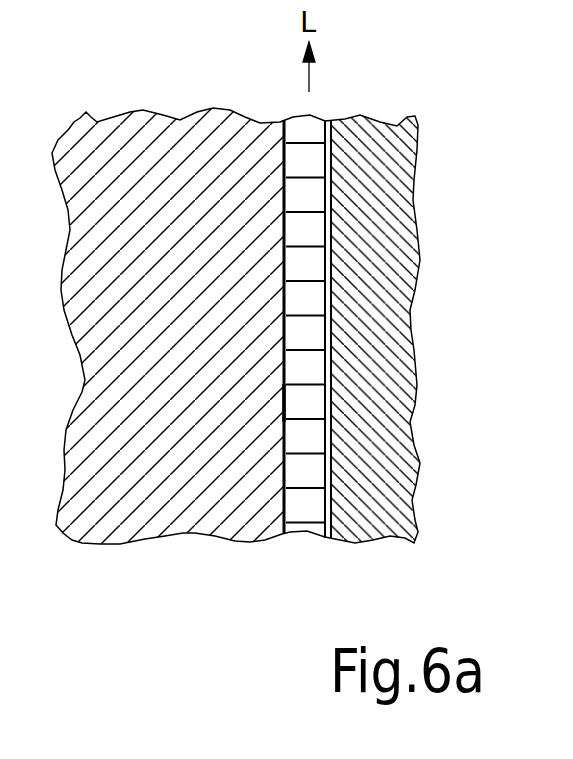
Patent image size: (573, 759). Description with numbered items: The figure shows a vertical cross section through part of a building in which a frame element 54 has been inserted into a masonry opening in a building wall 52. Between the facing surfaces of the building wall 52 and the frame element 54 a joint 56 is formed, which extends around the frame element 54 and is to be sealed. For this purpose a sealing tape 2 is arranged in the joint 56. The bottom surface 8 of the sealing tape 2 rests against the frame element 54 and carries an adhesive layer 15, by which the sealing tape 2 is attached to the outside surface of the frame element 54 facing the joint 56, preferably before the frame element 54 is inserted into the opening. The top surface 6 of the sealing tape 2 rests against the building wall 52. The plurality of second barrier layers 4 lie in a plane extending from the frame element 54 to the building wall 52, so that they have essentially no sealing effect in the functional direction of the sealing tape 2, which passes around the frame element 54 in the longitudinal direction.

The building wall 52 is at (126, 133).
The frame element 54 is at (365, 138).
The sealing tape 2 is at (304, 130).
The top surface 6 is at (282, 200).
The adhesive layer 15 is at (332, 281).
The bottom surface 8 is at (332, 401).
The second barrier layers 4 is at (288, 388).
The joint 56 is at (305, 548).